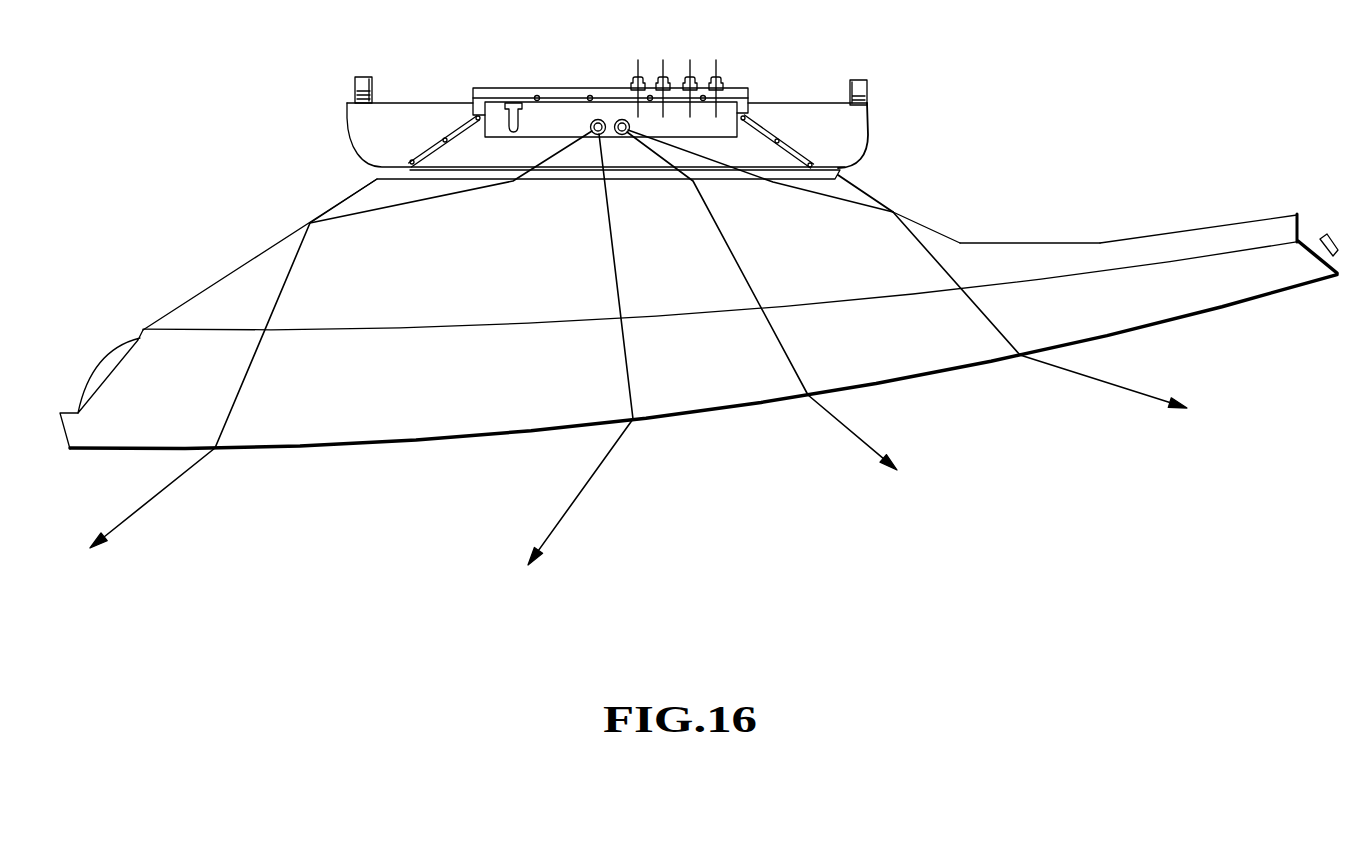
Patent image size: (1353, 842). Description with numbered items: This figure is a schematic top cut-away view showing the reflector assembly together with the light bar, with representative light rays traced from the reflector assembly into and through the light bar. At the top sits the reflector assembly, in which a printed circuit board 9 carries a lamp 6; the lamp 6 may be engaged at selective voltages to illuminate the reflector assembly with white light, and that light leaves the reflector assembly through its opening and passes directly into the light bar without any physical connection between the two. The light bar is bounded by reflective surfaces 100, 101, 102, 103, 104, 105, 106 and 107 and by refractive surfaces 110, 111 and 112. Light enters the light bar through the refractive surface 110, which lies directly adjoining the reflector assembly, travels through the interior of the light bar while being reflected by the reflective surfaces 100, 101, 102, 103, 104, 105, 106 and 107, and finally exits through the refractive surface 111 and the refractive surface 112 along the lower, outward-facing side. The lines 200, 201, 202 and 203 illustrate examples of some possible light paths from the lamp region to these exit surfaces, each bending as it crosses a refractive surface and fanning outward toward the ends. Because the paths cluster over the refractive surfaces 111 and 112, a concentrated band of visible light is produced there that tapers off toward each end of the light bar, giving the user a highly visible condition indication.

The lamp 6 is at (596, 120).
The printed circuit board 9 is at (620, 120).
The reflective surface 100 is at (703, 326).
The reflective surface 101 is at (933, 222).
The reflective surface 102 is at (1027, 237).
The reflective surface 103 is at (1178, 225).
The reflective surface 104 is at (1306, 223).
The reflective surface 105 is at (1342, 258).
The reflective surface 106 is at (337, 200).
The reflective surface 107 is at (112, 373).
The refractive surface 110 is at (832, 178).
The refractive surface 111 is at (370, 408).
The refractive surface 112 is at (720, 413).
The line 200 is at (156, 494).
The line 201 is at (553, 530).
The line 202 is at (867, 444).
The line 203 is at (1123, 388).